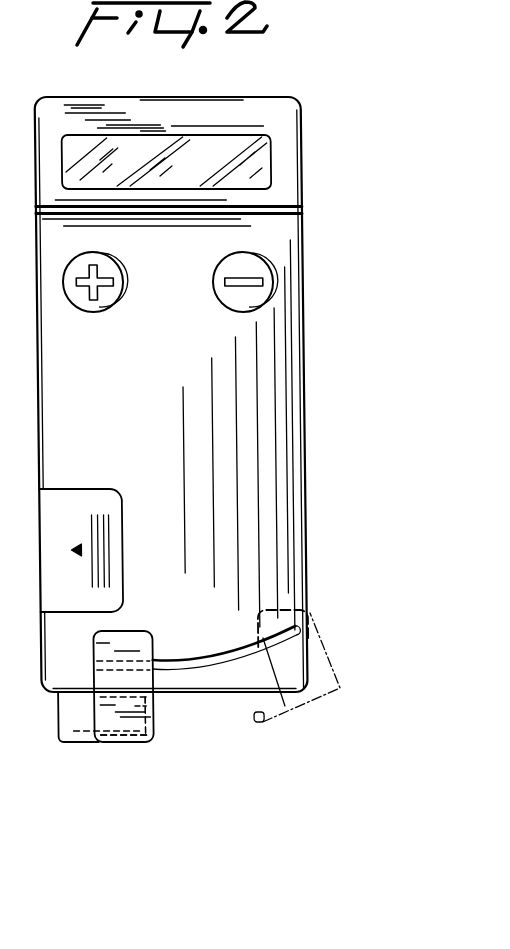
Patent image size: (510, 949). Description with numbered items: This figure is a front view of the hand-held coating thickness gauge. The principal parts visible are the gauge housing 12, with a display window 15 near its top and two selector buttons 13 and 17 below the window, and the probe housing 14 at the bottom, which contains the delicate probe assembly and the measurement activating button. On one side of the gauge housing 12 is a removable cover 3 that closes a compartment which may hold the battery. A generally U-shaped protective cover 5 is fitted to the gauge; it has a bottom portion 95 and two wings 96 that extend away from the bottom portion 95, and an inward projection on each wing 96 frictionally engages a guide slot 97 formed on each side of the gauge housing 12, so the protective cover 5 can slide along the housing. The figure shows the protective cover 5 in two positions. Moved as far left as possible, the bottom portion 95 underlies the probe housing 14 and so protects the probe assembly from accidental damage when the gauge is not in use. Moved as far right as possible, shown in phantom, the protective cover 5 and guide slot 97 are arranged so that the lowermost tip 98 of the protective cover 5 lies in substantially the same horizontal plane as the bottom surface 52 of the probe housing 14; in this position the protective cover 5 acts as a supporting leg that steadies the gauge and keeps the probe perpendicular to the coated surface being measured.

The removable cover 3 is at (78, 497).
The protective cover 5 is at (127, 626).
The gauge housing 12 is at (275, 430).
The selector button 13 is at (263, 270).
The probe housing 14 is at (54, 713).
The display window 15 is at (266, 137).
The selector button 17 is at (117, 273).
The bottom surface 52 is at (128, 745).
The bottom portion 95 is at (98, 745).
The wing 96 is at (128, 706).
The guide slot 97 is at (175, 660).
The lowermost tip 98 is at (250, 728).